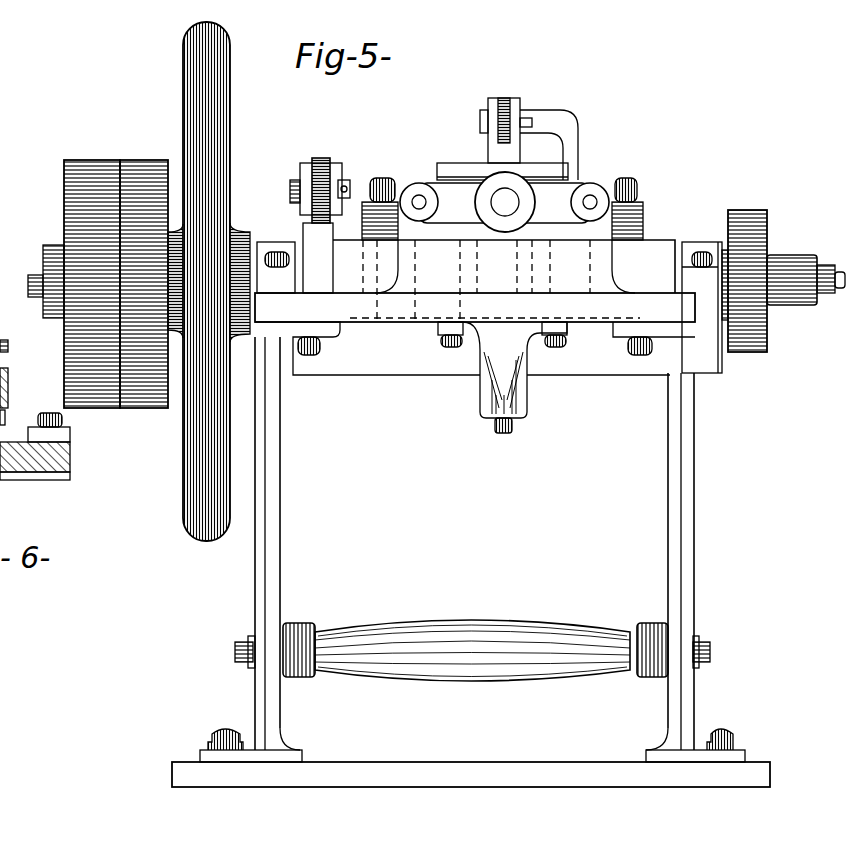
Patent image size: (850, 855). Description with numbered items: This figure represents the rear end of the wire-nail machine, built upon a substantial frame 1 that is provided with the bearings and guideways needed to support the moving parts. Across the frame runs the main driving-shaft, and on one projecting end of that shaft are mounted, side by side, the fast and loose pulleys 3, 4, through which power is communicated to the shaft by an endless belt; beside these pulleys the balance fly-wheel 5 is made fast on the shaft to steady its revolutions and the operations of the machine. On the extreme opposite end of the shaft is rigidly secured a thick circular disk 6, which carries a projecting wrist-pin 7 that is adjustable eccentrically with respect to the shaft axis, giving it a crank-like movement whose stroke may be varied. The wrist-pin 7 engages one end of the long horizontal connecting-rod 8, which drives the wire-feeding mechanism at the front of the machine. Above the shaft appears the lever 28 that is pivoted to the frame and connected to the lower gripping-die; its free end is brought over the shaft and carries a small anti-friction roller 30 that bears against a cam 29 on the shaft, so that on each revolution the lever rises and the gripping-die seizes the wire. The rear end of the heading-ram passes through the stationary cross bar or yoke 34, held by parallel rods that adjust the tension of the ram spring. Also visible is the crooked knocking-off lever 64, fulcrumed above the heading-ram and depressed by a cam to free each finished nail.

The frame 1 is at (471, 482).
The fast pulley 3 is at (144, 272).
The loose pulley 4 is at (74, 273).
The balance fly-wheel 5 is at (205, 281).
The circular disk 6 is at (744, 269).
The wrist-pin 7 is at (831, 268).
The connecting-rod 8 is at (792, 292).
The lever 28 is at (353, 178).
The cam 29 is at (318, 258).
The anti-friction roller 30 is at (316, 181).
The cross bar or yoke 34 is at (504, 197).
The crooked lever 64 is at (529, 134).